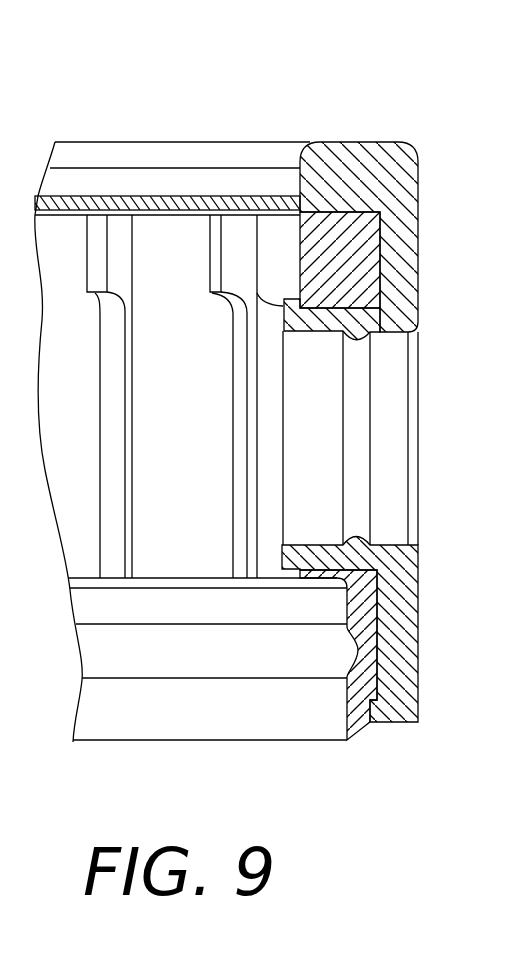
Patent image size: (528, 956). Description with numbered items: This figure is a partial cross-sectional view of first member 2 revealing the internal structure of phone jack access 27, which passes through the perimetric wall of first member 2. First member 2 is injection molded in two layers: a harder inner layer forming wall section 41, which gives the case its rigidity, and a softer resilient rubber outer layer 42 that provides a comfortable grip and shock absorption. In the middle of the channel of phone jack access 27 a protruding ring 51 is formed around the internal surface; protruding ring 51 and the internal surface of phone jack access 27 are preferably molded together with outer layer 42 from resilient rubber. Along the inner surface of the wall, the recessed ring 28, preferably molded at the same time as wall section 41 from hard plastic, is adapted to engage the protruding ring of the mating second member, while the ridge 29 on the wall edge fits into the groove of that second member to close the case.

The first member 2 is at (224, 106).
The outer layer 42 is at (383, 195).
The wall section 41 is at (357, 253).
The protruding ring 51 is at (360, 353).
The phone jack access 27 is at (396, 460).
The recessed ring 28 is at (315, 662).
The ridge 29 is at (358, 737).